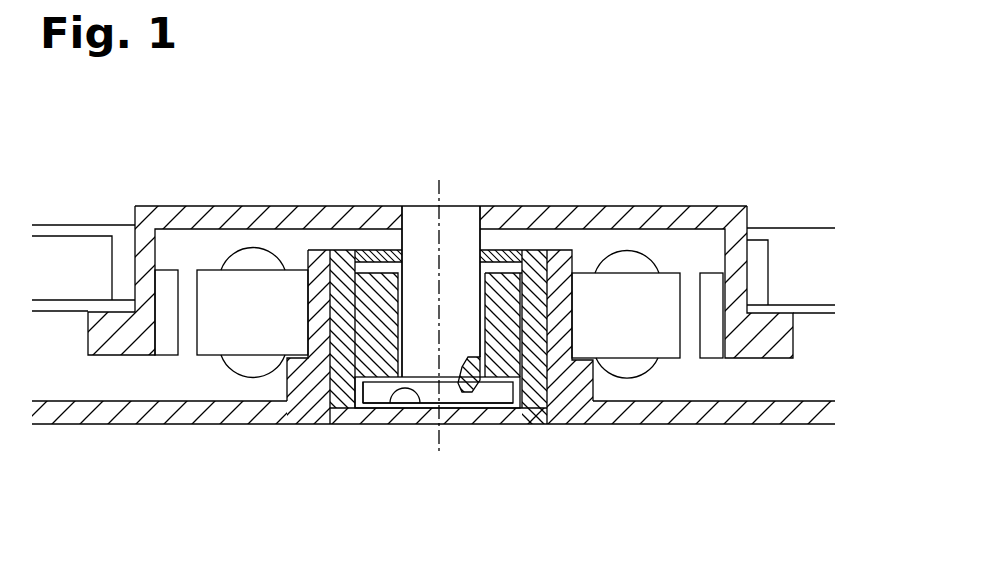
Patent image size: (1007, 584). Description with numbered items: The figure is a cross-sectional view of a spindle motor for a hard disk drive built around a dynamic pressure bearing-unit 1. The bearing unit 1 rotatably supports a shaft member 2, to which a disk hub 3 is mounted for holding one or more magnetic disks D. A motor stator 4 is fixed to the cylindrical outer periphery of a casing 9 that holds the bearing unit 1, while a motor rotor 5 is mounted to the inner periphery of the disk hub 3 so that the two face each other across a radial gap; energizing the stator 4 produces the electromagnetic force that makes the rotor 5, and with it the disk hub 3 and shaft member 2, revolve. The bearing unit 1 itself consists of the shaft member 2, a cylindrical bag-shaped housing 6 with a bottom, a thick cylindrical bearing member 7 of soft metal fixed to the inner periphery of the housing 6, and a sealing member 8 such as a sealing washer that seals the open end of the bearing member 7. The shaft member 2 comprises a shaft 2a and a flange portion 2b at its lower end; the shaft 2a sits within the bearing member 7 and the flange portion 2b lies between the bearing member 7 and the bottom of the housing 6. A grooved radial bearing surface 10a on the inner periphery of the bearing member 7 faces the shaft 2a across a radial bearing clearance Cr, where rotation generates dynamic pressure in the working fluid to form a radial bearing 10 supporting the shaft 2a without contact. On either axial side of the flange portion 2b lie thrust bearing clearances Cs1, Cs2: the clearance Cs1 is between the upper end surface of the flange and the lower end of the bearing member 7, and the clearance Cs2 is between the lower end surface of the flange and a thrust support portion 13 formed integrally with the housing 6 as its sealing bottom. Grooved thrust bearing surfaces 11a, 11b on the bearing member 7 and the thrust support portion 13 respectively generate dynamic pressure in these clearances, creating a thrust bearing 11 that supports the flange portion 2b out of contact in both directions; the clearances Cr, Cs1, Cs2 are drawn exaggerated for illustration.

The dynamic pressure bearing-unit 1 is at (357, 425).
The shaft member 2 is at (459, 206).
The shaft 2a is at (422, 230).
The flange portion 2b is at (505, 393).
The disk hub 3 is at (682, 215).
The motor stator 4 is at (665, 343).
The motor rotor 5 is at (710, 343).
The housing 6 is at (540, 262).
The bearing member 7 is at (504, 262).
The sealing member 8 is at (512, 258).
The casing 9 is at (77, 410).
The radial bearing 10 is at (322, 253).
The radial bearing surface 10a is at (470, 297).
The thrust bearing 11 is at (449, 387).
The thrust bearing surface 11a is at (378, 378).
The thrust bearing surface 11b is at (425, 405).
The thrust support portion 13 is at (483, 395).
The radial bearing clearance Cr is at (386, 322).
The thrust bearing clearance Cs1 is at (328, 380).
The thrust bearing clearance Cs2 is at (352, 406).
The magnetic disk D is at (826, 312).